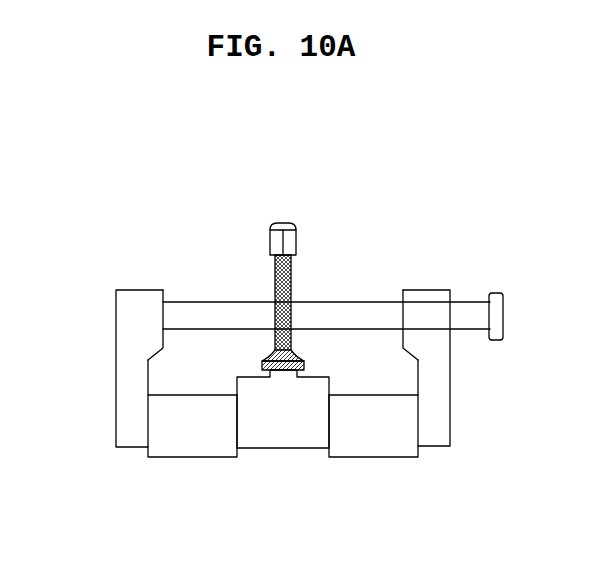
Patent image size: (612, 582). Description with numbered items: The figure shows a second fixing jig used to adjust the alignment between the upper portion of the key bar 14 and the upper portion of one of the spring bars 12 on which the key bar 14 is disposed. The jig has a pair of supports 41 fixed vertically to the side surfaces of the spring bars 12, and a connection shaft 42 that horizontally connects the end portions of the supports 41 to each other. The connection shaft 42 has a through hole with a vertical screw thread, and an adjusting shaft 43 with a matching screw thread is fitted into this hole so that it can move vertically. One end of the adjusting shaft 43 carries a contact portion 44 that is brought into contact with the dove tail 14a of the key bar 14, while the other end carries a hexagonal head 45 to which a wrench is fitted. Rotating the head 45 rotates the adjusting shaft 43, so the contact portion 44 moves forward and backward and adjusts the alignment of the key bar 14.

The spring bar 12 is at (197, 440).
The key bar 14 is at (283, 437).
The dove tail 14a is at (290, 375).
The support 41 is at (137, 378).
The connection shaft 42 is at (373, 315).
The adjusting shaft 43 is at (273, 281).
The contact portion 44 is at (263, 362).
The hexagonal head 45 is at (278, 222).